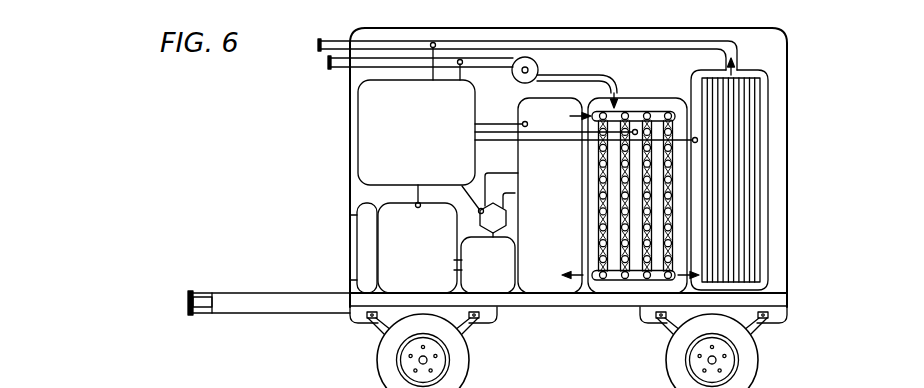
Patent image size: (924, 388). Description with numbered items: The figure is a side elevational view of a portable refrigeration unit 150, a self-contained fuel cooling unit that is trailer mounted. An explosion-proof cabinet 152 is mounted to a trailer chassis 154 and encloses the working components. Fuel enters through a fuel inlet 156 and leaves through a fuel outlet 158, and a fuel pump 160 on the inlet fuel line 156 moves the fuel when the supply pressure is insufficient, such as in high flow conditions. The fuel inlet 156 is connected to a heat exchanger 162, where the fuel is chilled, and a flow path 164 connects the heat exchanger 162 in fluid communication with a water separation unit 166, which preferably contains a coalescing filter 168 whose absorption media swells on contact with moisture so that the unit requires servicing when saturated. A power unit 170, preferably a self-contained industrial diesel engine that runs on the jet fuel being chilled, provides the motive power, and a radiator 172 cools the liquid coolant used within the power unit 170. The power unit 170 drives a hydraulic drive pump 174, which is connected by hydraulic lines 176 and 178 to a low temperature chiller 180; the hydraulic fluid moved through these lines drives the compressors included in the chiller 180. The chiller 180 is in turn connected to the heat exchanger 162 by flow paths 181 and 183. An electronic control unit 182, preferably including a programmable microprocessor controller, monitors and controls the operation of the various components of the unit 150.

The portable refrigeration unit 150 is at (602, 175).
The explosion-proof cabinet 152 is at (788, 194).
The trailer chassis 154 is at (263, 300).
The fuel inlet 156 is at (331, 68).
The fuel outlet 158 is at (319, 50).
The fuel pump 160 is at (516, 76).
The heat exchanger 162 is at (637, 107).
The flow path 164 is at (683, 278).
The water separation unit 166 is at (772, 223).
The coalescing filter 168 is at (752, 258).
The power unit 170 is at (390, 210).
The radiator 172 is at (362, 252).
The hydraulic drive pump 174 is at (495, 283).
The hydraulic line 176 is at (513, 196).
The hydraulic line 178 is at (507, 171).
The low temperature chiller 180 is at (535, 280).
The flow path 181 is at (585, 107).
The electronic control unit 182 is at (365, 118).
The flow path 183 is at (588, 278).